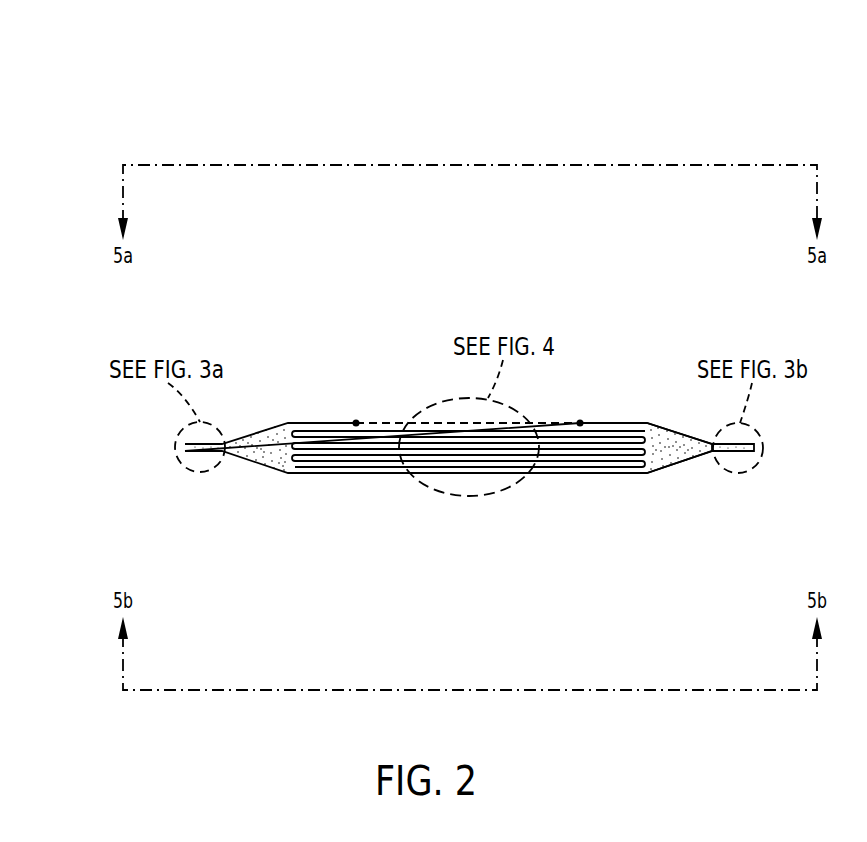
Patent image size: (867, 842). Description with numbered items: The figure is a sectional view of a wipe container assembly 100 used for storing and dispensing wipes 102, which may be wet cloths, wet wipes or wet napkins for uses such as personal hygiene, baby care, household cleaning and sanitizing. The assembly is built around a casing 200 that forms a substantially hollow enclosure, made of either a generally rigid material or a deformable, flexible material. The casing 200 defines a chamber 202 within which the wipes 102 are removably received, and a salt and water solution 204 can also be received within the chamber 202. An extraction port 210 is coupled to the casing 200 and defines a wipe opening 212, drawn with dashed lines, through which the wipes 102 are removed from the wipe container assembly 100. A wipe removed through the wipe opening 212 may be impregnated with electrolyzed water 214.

The wipe container assembly 100 is at (76, 87).
The casing 200 is at (284, 423).
The wipes 102 is at (304, 467).
The chamber 202 is at (252, 461).
The salt and water solution 204 is at (654, 466).
The electrolyzed water 214 is at (679, 487).
The wipe opening 212 is at (356, 423).
The extraction port 210 is at (580, 423).